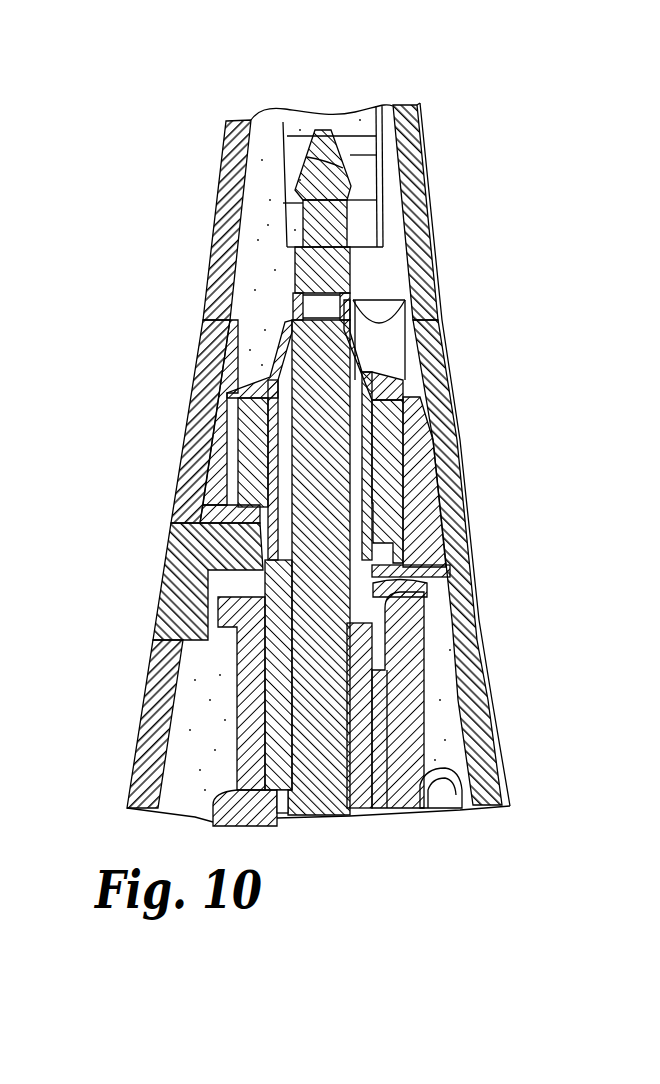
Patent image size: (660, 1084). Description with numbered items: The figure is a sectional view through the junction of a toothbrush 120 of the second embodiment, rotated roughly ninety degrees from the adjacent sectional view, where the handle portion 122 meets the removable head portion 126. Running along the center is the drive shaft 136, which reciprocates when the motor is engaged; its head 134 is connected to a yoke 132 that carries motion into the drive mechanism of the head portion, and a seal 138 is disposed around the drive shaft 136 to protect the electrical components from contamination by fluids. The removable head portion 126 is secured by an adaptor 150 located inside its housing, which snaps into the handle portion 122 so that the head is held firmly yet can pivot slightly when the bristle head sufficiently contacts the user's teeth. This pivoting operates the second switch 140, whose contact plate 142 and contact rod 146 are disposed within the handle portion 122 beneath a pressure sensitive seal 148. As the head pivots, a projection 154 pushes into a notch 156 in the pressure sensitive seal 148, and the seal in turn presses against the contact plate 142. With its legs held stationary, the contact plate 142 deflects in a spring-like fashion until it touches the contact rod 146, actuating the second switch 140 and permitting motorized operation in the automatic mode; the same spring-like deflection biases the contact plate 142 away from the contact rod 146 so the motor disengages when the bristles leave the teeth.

The toothbrush 120 is at (163, 417).
The handle portion 122 is at (548, 696).
The removable head portion 126 is at (482, 251).
The yoke 132 is at (363, 215).
The head 134 is at (340, 168).
The drive shaft 136 is at (330, 816).
The seal 138 is at (407, 320).
The second switch 140 is at (433, 572).
The contact plate 142 is at (432, 553).
The contact rod 146 is at (413, 688).
The pressure sensitive seal 148 is at (163, 583).
The adaptor 150 is at (440, 450).
The projection 154 is at (437, 542).
The notch 156 is at (428, 517).